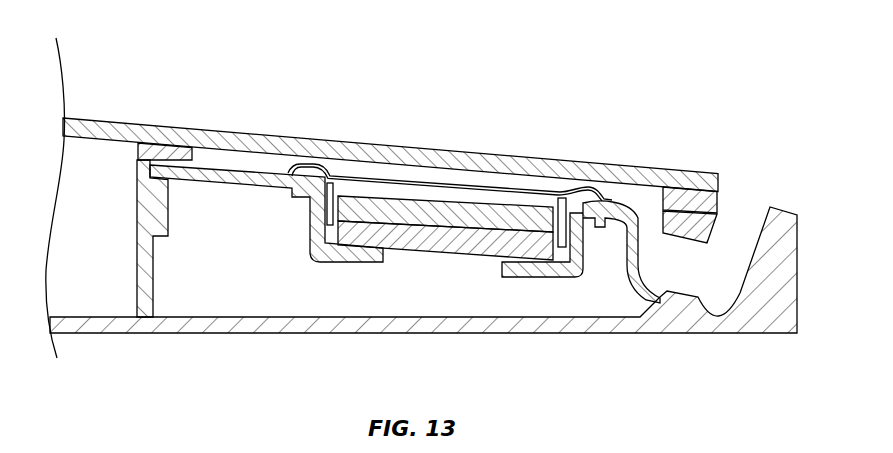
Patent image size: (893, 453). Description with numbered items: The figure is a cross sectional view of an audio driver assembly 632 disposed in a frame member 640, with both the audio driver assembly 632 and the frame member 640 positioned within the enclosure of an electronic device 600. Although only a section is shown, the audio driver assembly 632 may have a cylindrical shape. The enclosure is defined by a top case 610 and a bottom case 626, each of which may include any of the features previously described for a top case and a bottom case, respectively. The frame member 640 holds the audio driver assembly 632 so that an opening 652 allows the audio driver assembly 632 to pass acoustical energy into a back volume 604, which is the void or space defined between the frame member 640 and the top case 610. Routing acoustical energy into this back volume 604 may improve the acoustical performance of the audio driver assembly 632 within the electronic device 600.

The electronic device 600 is at (421, 207).
The bottom case 626 is at (193, 128).
The frame member 640 is at (266, 213).
The opening 652 is at (406, 281).
The audio driver assembly 632 is at (467, 261).
The back volume 604 is at (229, 294).
The top case 610 is at (125, 332).